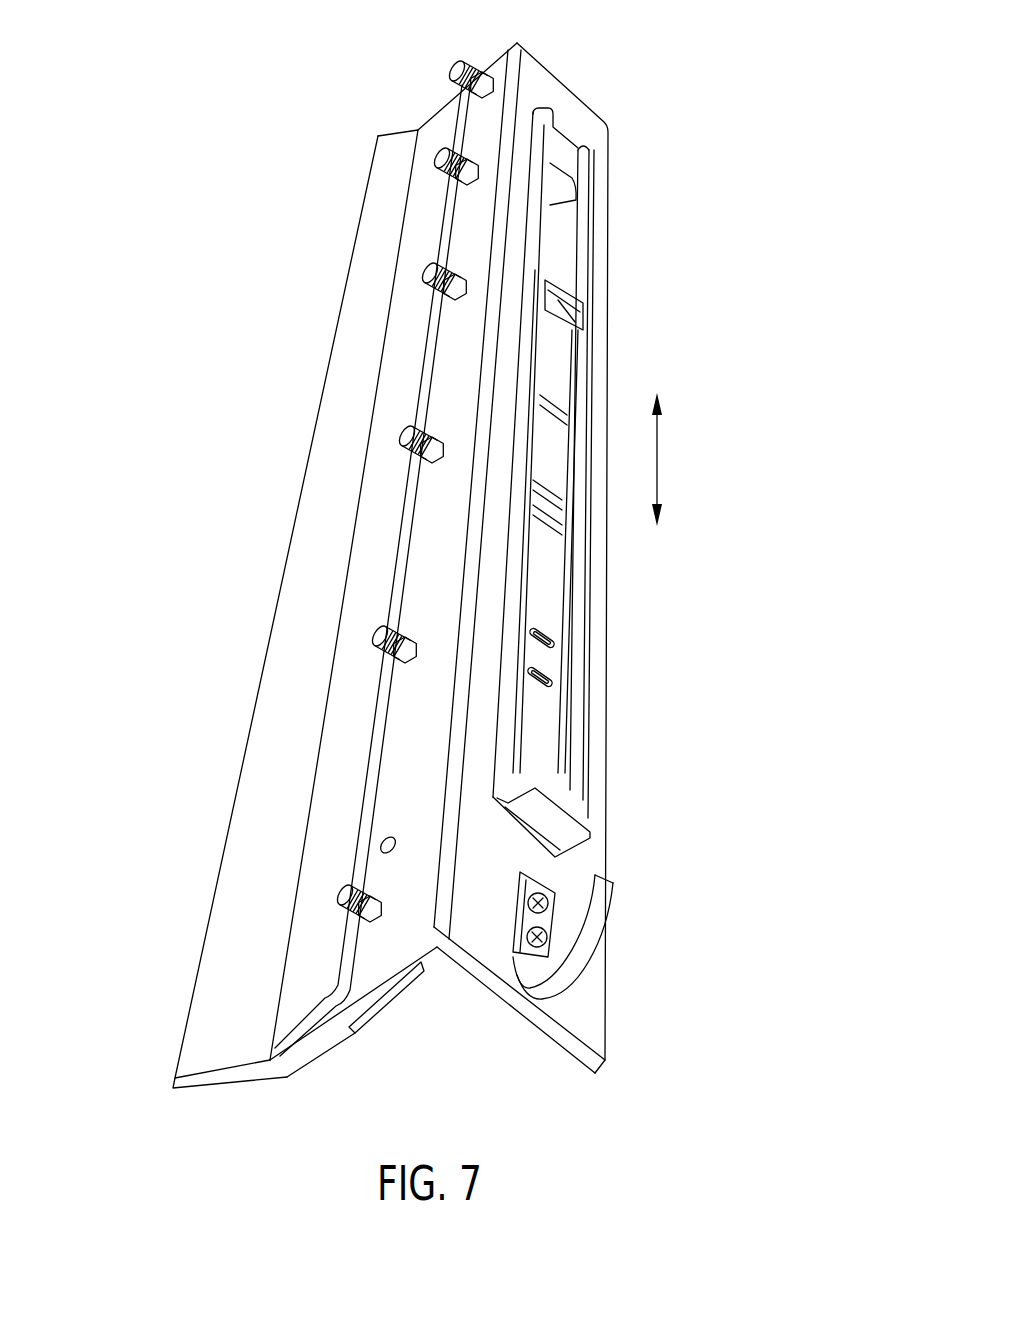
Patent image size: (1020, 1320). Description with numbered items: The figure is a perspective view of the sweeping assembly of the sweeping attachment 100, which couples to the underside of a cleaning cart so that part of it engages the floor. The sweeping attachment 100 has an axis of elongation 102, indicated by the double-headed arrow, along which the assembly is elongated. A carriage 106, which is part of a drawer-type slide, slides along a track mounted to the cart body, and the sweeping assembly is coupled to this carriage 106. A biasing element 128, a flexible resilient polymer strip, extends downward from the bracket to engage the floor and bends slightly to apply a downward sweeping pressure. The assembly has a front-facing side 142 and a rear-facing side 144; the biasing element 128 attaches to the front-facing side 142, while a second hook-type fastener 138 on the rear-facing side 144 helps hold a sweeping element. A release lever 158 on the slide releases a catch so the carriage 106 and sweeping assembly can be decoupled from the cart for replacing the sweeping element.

The sweeping attachment 100 is at (705, 101).
The carriage 106 is at (565, 243).
The release lever 158 is at (553, 388).
The axis of elongation 102 is at (658, 460).
The rear-facing side 144 is at (198, 822).
The biasing element 128 is at (212, 1027).
The second hook-type fastener 138 is at (300, 975).
The front-facing side 142 is at (425, 1030).